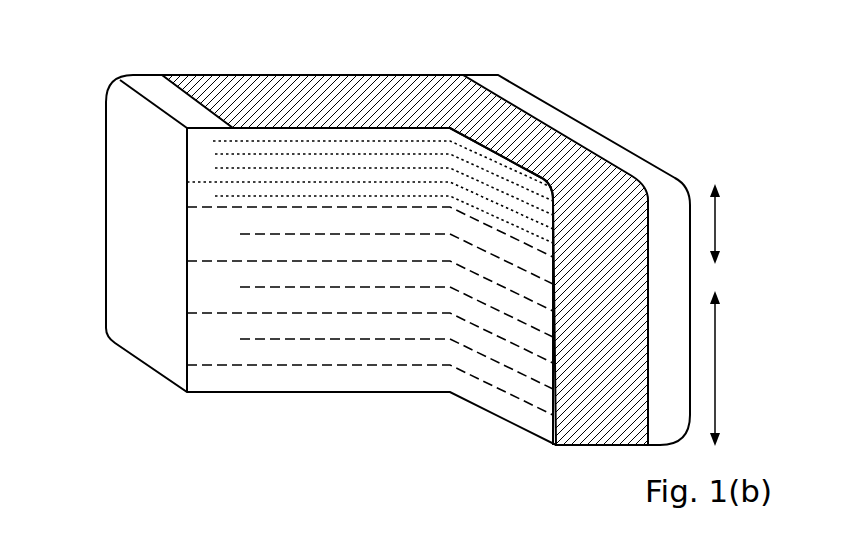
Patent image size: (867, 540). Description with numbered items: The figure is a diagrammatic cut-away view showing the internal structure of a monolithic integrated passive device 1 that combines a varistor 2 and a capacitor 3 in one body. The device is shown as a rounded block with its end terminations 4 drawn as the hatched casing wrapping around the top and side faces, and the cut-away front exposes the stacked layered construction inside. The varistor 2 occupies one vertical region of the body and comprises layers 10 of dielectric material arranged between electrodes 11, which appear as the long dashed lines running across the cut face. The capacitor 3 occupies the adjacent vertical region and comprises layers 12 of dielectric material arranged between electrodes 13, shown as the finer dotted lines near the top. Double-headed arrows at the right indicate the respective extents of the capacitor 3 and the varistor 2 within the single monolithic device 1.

The monolithic integrated passive device 1 is at (84, 80).
The varistor 2 is at (725, 368).
The capacitor 3 is at (725, 221).
The end terminations 4 is at (557, 120).
The layers of dielectric material 10 is at (207, 341).
The electrodes 11 is at (345, 340).
The layers of dielectric material 12 is at (210, 197).
The electrodes 13 is at (233, 146).